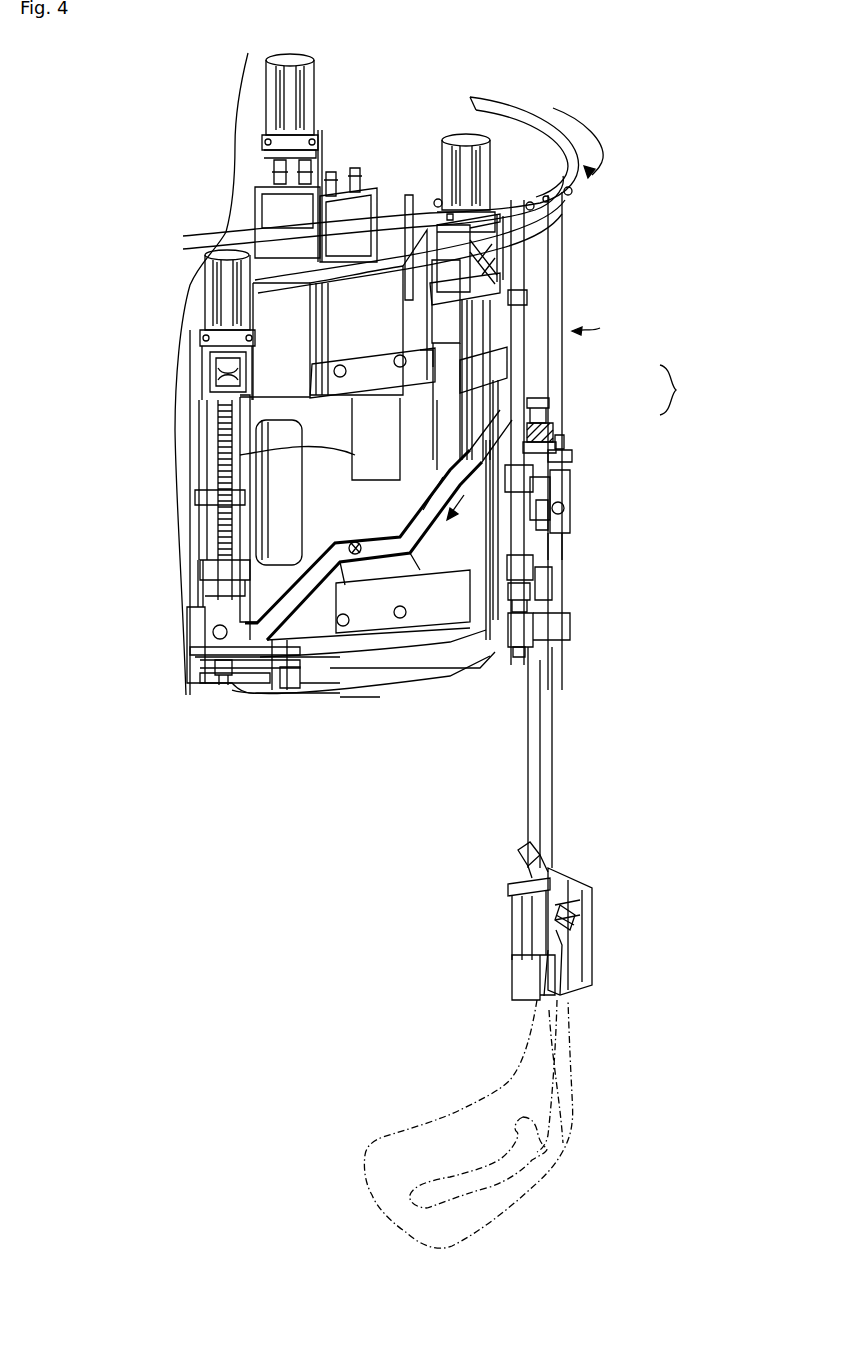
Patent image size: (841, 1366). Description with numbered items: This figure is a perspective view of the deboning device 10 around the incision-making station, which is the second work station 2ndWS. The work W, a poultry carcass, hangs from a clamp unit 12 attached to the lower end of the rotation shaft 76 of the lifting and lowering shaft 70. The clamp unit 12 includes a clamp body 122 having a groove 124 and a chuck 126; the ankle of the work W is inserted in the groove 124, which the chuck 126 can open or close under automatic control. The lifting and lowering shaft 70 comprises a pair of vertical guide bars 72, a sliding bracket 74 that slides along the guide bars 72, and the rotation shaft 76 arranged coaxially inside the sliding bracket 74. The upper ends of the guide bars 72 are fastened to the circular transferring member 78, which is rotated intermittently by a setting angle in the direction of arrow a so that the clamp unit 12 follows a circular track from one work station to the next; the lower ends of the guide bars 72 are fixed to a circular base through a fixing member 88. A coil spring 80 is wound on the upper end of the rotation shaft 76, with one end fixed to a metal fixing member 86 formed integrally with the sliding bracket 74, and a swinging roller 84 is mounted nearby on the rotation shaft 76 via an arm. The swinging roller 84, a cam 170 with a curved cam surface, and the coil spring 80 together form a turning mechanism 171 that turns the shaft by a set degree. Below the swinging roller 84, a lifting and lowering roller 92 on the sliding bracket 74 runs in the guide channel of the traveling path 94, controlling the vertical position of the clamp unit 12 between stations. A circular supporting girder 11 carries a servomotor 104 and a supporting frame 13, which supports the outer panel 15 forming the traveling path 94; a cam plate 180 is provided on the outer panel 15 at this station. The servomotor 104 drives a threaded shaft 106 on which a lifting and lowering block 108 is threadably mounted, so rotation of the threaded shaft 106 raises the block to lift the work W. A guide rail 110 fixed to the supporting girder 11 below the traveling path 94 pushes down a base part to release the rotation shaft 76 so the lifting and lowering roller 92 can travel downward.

The deboning device 10 is at (248, 128).
The circular supporting girder 11 is at (392, 210).
The clamp unit 12 is at (513, 872).
The supporting frame 13 is at (342, 320).
The outer panel 15 is at (306, 412).
The lifting and lowering shaft 70 is at (570, 525).
The guide bar 72 is at (565, 263).
The sliding bracket 74 is at (465, 524).
The rotation shaft 76 is at (556, 750).
The circular transferring member 78 is at (512, 101).
The coil spring 80 is at (556, 432).
The swinging roller 84 is at (530, 418).
The metal fixing member 86 is at (568, 445).
The fixing member 88 is at (570, 616).
The lifting and lowering roller 92 is at (355, 544).
The traveling path 94 is at (280, 618).
The servomotor 104 is at (314, 70).
The threaded shaft 106 is at (216, 470).
The lifting and lowering block 108 is at (221, 660).
The guide rail 110 is at (364, 684).
The clamp body 122 is at (510, 915).
The groove 124 is at (548, 1015).
The chuck 126 is at (578, 888).
The cam 170 is at (522, 408).
The turning mechanism 171 is at (695, 390).
The cam plate 180 is at (352, 456).
The arrow a is at (606, 134).
The second work station 2ndWS is at (635, 327).
The work W is at (457, 1110).